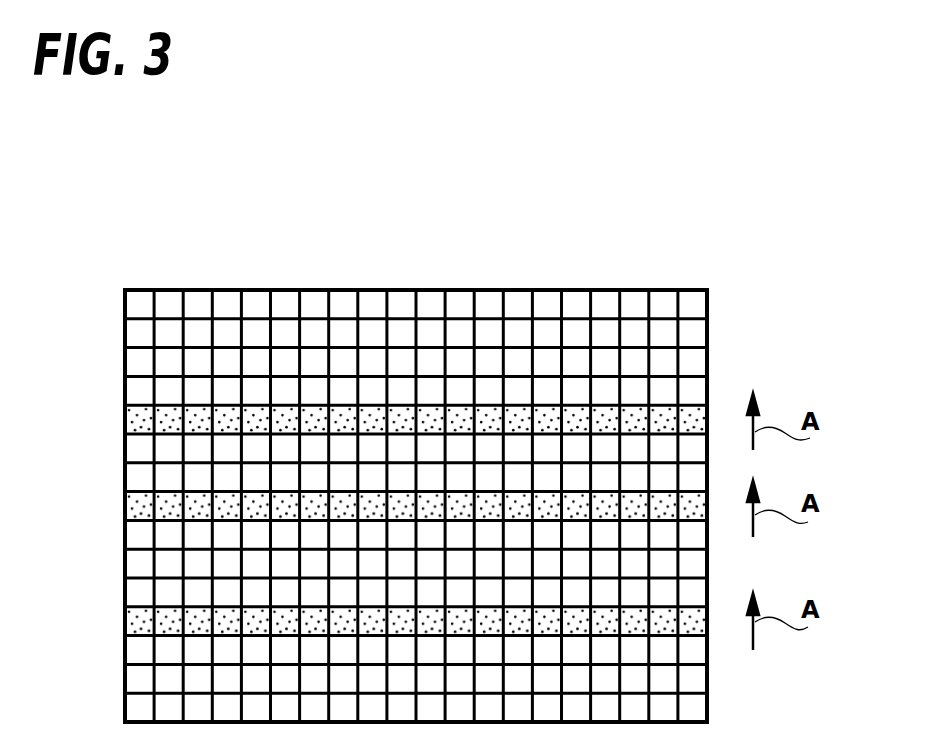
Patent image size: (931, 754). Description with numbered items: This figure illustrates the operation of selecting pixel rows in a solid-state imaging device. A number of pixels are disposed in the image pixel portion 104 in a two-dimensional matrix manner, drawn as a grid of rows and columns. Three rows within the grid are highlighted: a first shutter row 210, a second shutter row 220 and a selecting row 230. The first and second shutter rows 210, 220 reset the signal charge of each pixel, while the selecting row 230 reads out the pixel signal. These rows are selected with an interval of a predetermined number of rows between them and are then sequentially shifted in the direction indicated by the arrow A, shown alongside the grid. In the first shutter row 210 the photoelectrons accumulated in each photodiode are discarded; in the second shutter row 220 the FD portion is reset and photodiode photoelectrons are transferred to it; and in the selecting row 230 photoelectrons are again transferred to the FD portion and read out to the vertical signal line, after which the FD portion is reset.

The image pixel portion 104 is at (414, 447).
The first shutter row 210 is at (131, 417).
The second shutter row 220 is at (130, 506).
The selecting row 230 is at (136, 621).